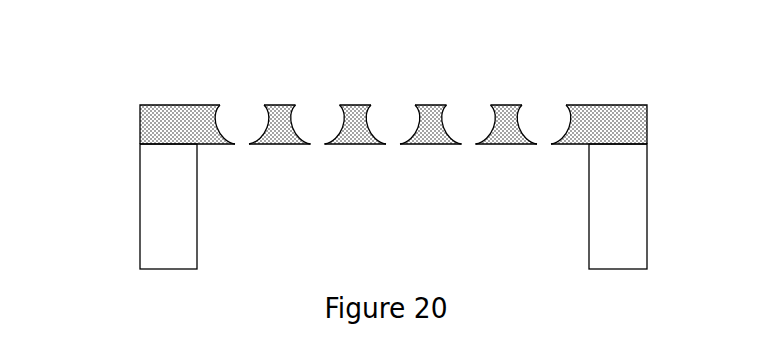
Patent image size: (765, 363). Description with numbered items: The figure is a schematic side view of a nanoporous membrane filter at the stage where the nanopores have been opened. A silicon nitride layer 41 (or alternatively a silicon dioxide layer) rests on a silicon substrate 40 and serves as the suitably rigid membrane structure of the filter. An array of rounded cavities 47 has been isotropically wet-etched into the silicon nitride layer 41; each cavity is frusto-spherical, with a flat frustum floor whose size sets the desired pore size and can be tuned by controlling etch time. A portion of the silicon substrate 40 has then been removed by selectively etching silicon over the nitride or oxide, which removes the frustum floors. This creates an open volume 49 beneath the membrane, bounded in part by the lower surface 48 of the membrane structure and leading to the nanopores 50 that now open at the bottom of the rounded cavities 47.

The silicon substrate 40 is at (140, 195).
The silicon nitride layer 41 is at (140, 125).
The rounded cavities 47 is at (243, 120).
The lower surface 48 is at (568, 147).
The open volume 49 is at (300, 218).
The nanopores 50 is at (245, 146).